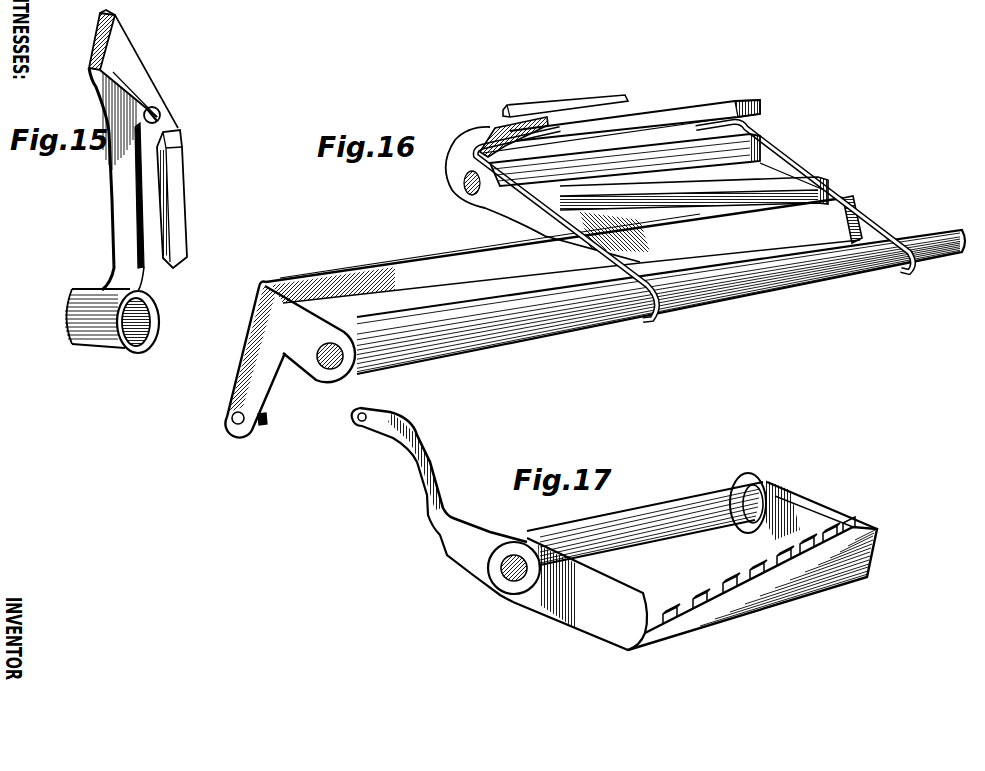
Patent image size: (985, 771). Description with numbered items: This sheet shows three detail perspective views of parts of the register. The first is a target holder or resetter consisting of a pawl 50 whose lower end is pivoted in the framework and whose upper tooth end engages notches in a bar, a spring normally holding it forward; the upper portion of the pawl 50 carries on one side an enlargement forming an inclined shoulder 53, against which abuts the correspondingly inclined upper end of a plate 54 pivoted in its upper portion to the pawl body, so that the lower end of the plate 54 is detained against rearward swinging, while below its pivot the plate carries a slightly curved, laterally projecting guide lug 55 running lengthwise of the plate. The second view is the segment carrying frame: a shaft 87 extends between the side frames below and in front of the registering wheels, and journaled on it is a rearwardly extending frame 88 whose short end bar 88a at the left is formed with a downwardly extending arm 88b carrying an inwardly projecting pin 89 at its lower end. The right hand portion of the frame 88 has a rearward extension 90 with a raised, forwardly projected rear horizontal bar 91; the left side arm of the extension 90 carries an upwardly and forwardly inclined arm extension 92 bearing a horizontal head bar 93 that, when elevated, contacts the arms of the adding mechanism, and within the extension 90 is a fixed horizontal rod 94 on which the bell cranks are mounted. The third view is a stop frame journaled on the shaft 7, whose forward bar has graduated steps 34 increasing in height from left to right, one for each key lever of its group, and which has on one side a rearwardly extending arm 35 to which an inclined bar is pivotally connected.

In FIG. 15, the pawl 50 is at (120, 182).
In FIG. 15, the inclined shoulder 53 is at (113, 72).
In FIG. 15, the plate 54 is at (166, 120).
In FIG. 15, the guide lug 55 is at (177, 198).
In FIG. 16, the shaft 87 is at (530, 339).
In FIG. 16, the frame 88 is at (453, 255).
In FIG. 16, the short end bar 88a is at (288, 325).
In FIG. 16, the downwardly extending arm 88b is at (238, 383).
In FIG. 16, the pin 89 is at (266, 420).
In FIG. 16, the rearward extension 90 is at (807, 162).
In FIG. 16, the rear horizontal bar 91 is at (687, 114).
In FIG. 16, the arm extension 92 is at (497, 128).
In FIG. 16, the head bar 93 is at (583, 97).
In FIG. 16, the fixed horizontal rod 94 is at (760, 143).
In FIG. 17, the shaft 7 is at (660, 517).
In FIG. 17, the graduated shoulders or steps 34 is at (722, 597).
In FIG. 17, the rearwardly extending arm 35 is at (427, 482).